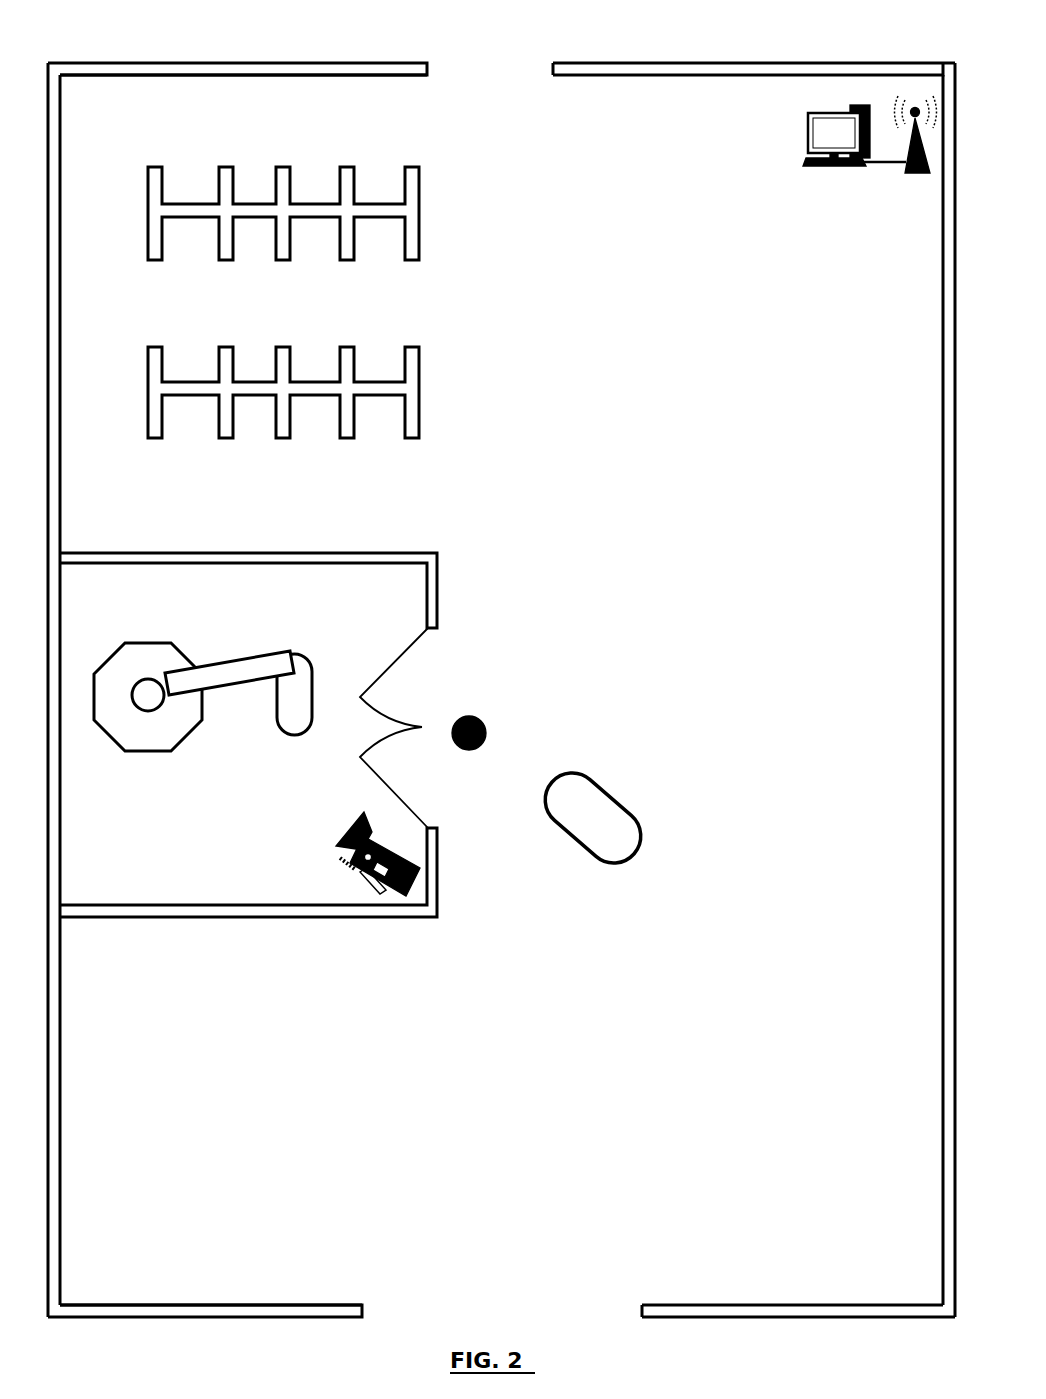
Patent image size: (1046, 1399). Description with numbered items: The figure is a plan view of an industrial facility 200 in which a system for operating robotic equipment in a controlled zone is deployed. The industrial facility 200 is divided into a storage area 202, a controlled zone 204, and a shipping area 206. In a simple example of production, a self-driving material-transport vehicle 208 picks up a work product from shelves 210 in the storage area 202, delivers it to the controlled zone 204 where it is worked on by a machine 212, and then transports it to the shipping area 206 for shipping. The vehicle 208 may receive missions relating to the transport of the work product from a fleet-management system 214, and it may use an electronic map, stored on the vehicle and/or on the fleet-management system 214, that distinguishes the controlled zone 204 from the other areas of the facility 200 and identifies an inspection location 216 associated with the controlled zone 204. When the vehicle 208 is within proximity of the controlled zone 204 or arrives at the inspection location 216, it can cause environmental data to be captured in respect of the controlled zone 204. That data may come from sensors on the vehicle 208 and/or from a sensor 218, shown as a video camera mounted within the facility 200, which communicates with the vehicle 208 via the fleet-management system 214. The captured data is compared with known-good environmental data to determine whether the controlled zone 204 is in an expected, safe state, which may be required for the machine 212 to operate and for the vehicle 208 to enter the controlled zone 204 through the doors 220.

The industrial facility 200 is at (508, 26).
The storage area 202 is at (508, 283).
The controlled zone 204 is at (185, 817).
The shipping area 206 is at (460, 1173).
The self-driving material-transport vehicle 208 is at (612, 825).
The shelves 210 is at (423, 379).
The machine 212 is at (147, 645).
The fleet-management system 214 is at (808, 137).
The inspection location 216 is at (486, 728).
The sensor 218 is at (340, 845).
The doors 220 is at (407, 655).